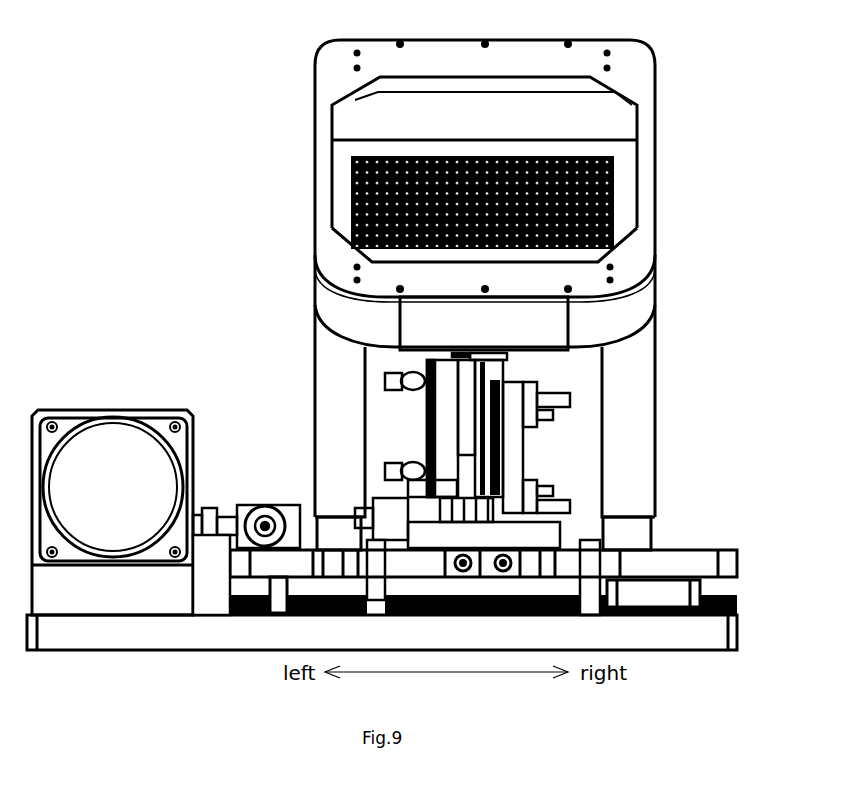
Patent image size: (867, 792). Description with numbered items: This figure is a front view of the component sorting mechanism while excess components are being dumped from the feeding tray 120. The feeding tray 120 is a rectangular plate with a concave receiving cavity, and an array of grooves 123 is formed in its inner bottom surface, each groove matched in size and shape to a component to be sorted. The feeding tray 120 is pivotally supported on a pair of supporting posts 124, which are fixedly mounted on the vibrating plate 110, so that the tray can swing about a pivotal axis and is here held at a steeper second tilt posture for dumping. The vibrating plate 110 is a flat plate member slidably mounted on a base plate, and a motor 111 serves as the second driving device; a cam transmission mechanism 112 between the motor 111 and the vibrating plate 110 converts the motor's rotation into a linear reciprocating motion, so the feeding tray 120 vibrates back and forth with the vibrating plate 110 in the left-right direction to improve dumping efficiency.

The vibrating plate 110 is at (677, 563).
The motor 111 is at (105, 452).
The cam transmission mechanism 112 is at (220, 523).
The feeding tray 120 is at (455, 57).
The grooves 123 is at (612, 212).
The supporting posts 124 is at (330, 412).